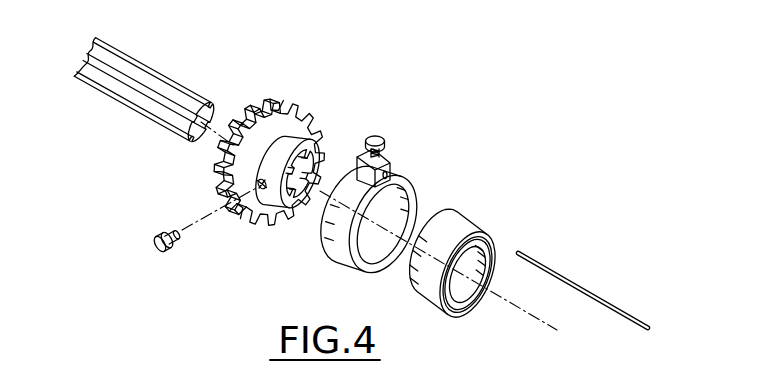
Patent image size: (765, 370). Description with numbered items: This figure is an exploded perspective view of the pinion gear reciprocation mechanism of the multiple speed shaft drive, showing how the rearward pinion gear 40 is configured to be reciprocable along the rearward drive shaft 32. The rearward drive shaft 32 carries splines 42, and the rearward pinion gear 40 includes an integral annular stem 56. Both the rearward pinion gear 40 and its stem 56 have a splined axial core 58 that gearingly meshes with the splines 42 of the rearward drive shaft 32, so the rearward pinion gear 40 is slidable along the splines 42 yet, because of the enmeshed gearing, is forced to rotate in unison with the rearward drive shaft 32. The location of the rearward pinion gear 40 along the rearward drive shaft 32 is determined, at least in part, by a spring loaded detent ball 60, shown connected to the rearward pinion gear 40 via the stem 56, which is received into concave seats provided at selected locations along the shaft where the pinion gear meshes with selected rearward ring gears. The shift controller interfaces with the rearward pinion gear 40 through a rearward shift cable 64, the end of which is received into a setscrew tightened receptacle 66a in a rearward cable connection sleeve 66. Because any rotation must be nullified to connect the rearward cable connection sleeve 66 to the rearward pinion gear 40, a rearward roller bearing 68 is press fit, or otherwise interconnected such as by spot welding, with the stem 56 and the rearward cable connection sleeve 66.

The rearward drive shaft 32 is at (165, 72).
The splines 42 is at (217, 115).
The rearward pinion gear 40 is at (298, 108).
The annular stem 56 is at (290, 143).
The splined axial core 58 is at (297, 222).
The spring loaded detent ball 60 is at (160, 234).
The rearward cable connection sleeve 66 is at (326, 252).
The setscrew tightened receptacle 66a is at (392, 171).
The rearward roller bearing 68 is at (466, 232).
The rearward shift cable 64 is at (555, 270).